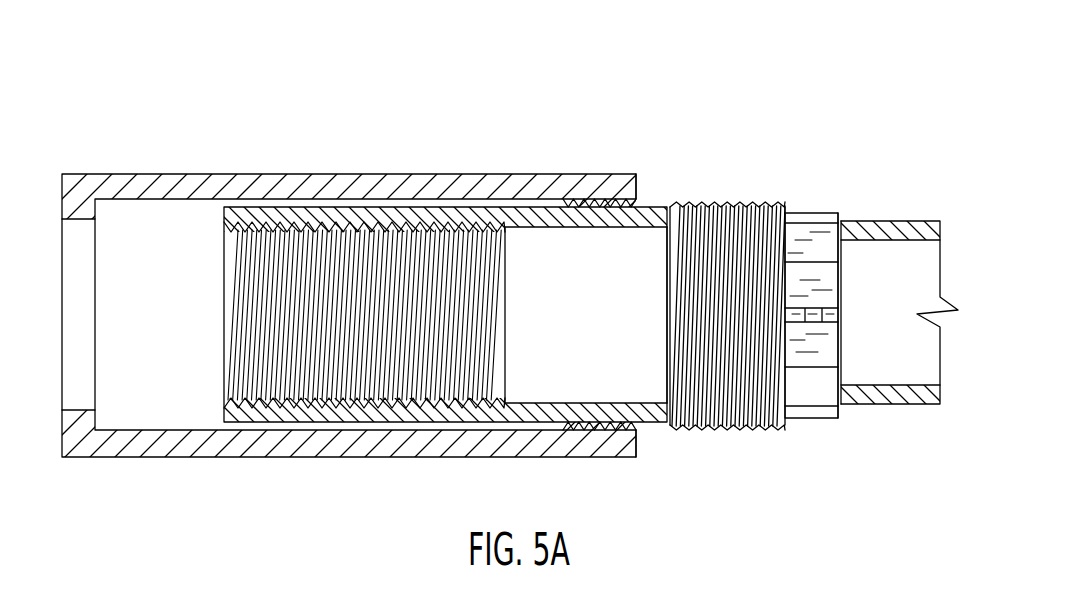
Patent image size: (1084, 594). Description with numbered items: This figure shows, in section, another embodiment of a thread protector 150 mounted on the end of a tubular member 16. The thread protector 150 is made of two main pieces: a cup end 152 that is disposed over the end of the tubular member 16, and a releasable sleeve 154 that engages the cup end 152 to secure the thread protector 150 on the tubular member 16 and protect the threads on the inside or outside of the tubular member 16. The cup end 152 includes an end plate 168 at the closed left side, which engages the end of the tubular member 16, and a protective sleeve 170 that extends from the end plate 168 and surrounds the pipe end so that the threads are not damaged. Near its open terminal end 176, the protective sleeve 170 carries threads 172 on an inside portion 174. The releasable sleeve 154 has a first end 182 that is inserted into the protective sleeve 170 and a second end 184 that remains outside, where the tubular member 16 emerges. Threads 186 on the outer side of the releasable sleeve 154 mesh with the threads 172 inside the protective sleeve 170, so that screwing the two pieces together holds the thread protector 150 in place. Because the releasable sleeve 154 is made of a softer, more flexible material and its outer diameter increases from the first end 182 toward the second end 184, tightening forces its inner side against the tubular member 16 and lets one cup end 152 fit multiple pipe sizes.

The thread protector 150 is at (486, 234).
The cup end 152 is at (357, 254).
The end plate 168 is at (62, 237).
The protective sleeve 170 is at (365, 174).
The threads 172 is at (590, 200).
The inside portion 174 is at (257, 205).
The terminal end 176 is at (636, 183).
The first end 182 is at (672, 344).
The threads 186 is at (732, 203).
The releasable sleeve 154 is at (803, 213).
The second end 184 is at (840, 298).
The tubular member 16 is at (888, 221).